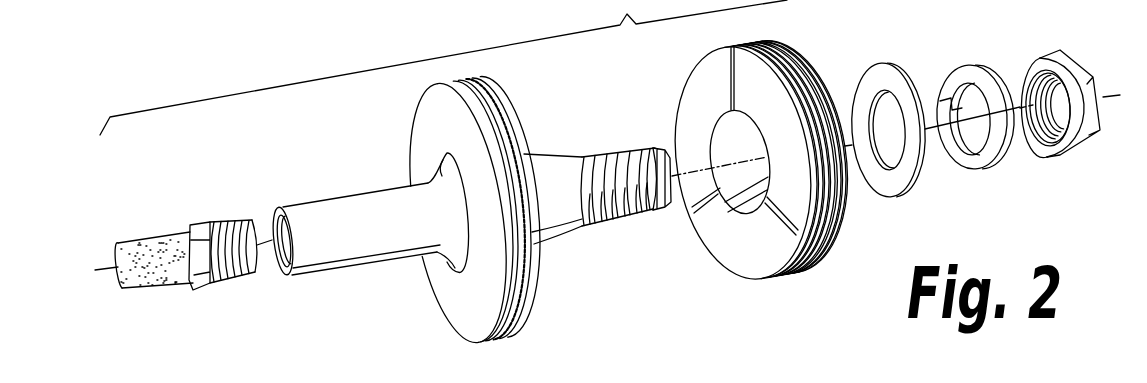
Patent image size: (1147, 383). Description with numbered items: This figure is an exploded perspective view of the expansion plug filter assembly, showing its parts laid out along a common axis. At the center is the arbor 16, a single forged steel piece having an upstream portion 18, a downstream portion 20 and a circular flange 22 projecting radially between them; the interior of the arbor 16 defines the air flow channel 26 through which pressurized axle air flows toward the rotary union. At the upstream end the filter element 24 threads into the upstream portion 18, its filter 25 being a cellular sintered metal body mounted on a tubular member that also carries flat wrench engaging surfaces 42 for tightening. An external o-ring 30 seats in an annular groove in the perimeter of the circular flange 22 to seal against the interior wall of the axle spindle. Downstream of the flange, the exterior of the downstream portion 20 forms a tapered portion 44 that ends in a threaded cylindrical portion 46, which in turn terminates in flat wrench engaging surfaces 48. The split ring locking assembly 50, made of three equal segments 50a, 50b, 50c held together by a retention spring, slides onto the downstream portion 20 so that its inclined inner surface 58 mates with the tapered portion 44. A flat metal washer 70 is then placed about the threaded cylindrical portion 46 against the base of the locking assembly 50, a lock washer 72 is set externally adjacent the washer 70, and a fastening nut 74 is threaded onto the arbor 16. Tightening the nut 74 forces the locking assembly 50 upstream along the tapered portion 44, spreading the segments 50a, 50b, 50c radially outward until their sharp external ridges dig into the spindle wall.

The arbor 16 is at (400, 262).
The upstream portion 18 is at (318, 210).
The downstream portion 20 is at (588, 153).
The circular flange 22 is at (440, 107).
The filter element 24 is at (192, 212).
The filter 25 is at (157, 248).
The air flow channel 26 is at (278, 232).
The external o-ring 30 is at (507, 330).
The flat wrench engaging surfaces 42 is at (200, 285).
The tapered portion 44 is at (547, 167).
The threaded cylindrical portion 46 is at (612, 220).
The flat wrench engaging surfaces 48 is at (660, 150).
The split ring locking assembly 50 is at (738, 283).
The segment 50a is at (688, 98).
The segment 50b is at (793, 43).
The segment 50c is at (782, 248).
The curvilinear inclined inner surface 58 is at (721, 137).
The flat metal washer 70 is at (898, 194).
The lock washer 72 is at (983, 168).
The fastening nut 74 is at (1061, 156).